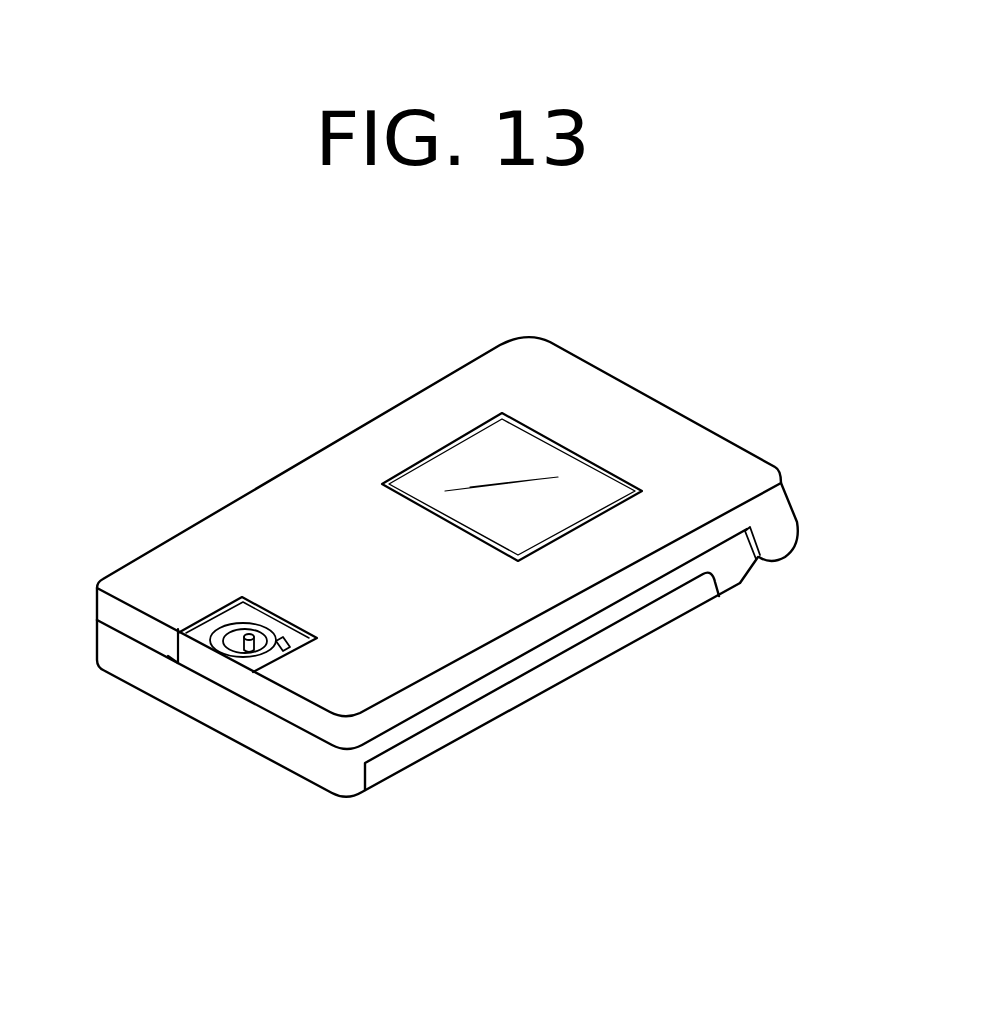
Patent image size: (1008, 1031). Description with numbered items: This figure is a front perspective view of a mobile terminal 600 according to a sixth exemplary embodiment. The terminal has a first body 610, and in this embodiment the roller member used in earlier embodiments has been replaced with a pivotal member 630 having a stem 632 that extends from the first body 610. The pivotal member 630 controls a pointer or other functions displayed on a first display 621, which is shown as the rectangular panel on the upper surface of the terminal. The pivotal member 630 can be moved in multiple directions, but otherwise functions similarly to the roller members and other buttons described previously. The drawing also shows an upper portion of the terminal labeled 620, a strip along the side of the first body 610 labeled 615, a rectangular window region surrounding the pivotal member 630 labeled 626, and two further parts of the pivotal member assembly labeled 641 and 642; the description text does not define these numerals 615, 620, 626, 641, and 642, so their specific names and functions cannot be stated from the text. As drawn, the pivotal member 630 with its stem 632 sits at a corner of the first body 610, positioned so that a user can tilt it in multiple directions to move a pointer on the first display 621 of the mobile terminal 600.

The mobile terminal 600 is at (297, 368).
The first body 610 is at (742, 585).
The guide rail 615 is at (565, 663).
The second body 620 is at (705, 477).
The first display 621 is at (486, 452).
The camera window 626 is at (241, 598).
The pivotal member 630 is at (248, 647).
The stem 632 is at (276, 642).
The lens cover 641 is at (225, 645).
The ring 642 is at (252, 662).